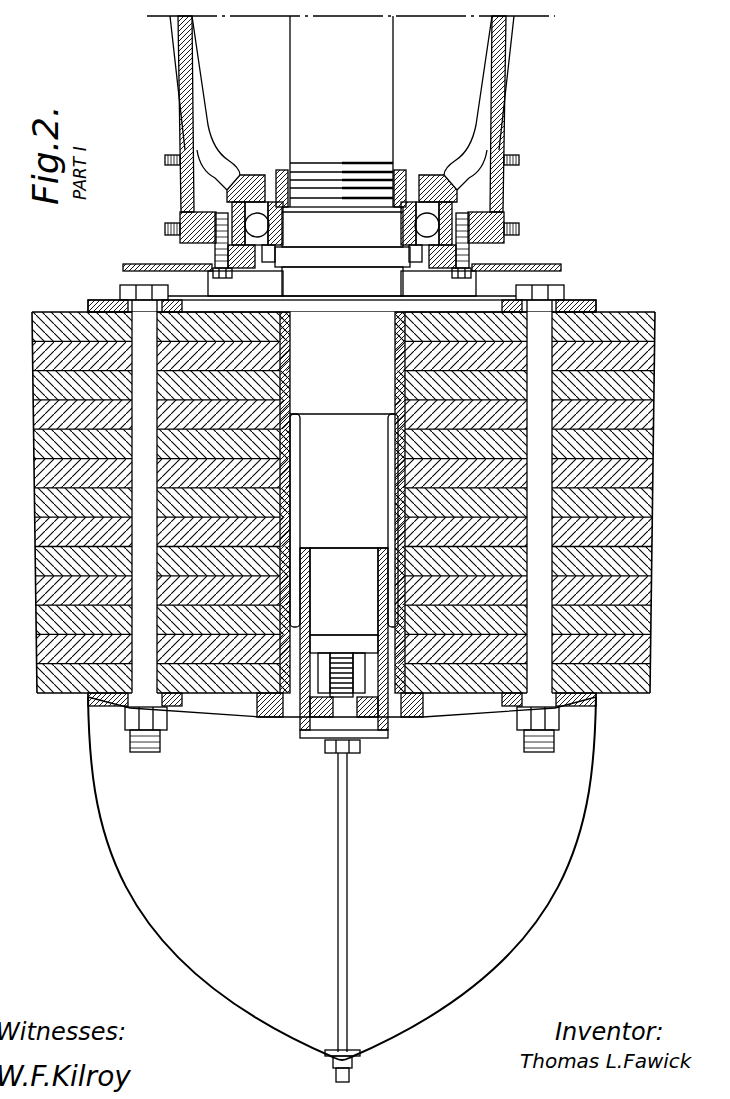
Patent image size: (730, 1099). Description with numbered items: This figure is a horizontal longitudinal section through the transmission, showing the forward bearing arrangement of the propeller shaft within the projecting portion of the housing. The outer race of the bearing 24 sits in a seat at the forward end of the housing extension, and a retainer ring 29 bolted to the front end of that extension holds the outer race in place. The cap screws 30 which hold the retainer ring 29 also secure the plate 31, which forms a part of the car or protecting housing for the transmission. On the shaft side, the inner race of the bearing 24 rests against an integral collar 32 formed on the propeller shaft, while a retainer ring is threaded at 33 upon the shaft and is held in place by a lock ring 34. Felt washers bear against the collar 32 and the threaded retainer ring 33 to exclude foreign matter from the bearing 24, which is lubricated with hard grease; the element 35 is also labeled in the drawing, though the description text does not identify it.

The bearing 24 is at (430, 177).
The retainer ring 29 is at (207, 257).
The cap screws 30 is at (470, 257).
The plate 31 is at (317, 283).
The integral collar 32 is at (362, 257).
The threaded retainer ring 33 is at (385, 195).
The lock ring 34 is at (403, 173).
The ball bearing 35 is at (265, 177).